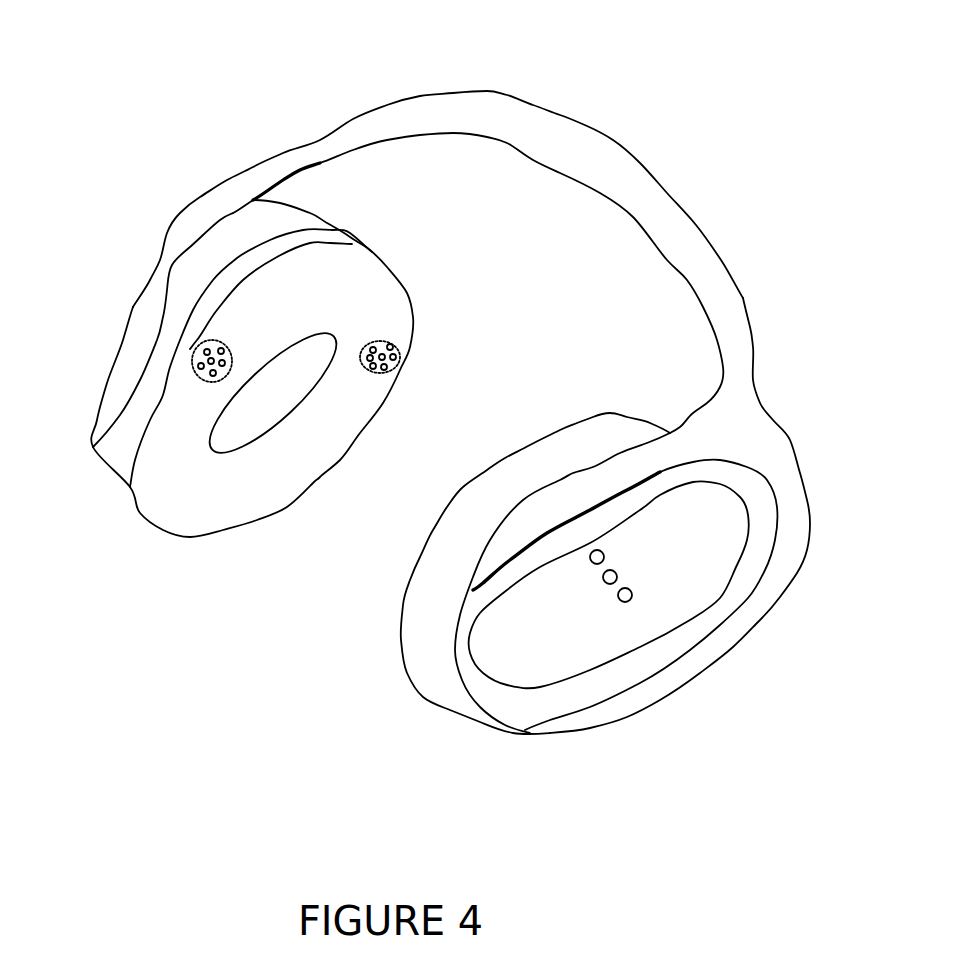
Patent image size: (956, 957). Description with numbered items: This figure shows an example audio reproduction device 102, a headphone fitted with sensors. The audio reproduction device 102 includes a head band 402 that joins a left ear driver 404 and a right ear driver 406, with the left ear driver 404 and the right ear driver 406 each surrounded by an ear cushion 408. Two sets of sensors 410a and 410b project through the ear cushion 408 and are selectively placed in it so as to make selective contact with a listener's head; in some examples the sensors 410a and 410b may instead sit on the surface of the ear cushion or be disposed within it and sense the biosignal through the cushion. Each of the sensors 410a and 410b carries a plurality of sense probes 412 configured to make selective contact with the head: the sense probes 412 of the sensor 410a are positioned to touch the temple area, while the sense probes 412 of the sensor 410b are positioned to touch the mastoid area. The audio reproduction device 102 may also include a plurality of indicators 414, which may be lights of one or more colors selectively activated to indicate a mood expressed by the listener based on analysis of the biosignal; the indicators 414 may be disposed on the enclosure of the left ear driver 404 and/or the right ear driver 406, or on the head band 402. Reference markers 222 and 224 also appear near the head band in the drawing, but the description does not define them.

The audio reproduction device 102 is at (589, 75).
The first side region 222 is at (60, 143).
The second side region 224 is at (230, 140).
The head band 402 is at (377, 110).
The left ear driver 404 is at (310, 220).
The right ear driver 406 is at (773, 577).
The ear cushion 408 is at (467, 530).
The sensor 410a is at (403, 347).
The sensor 410b is at (193, 360).
The sense probes 412 is at (397, 355).
The indicators 414 is at (590, 565).